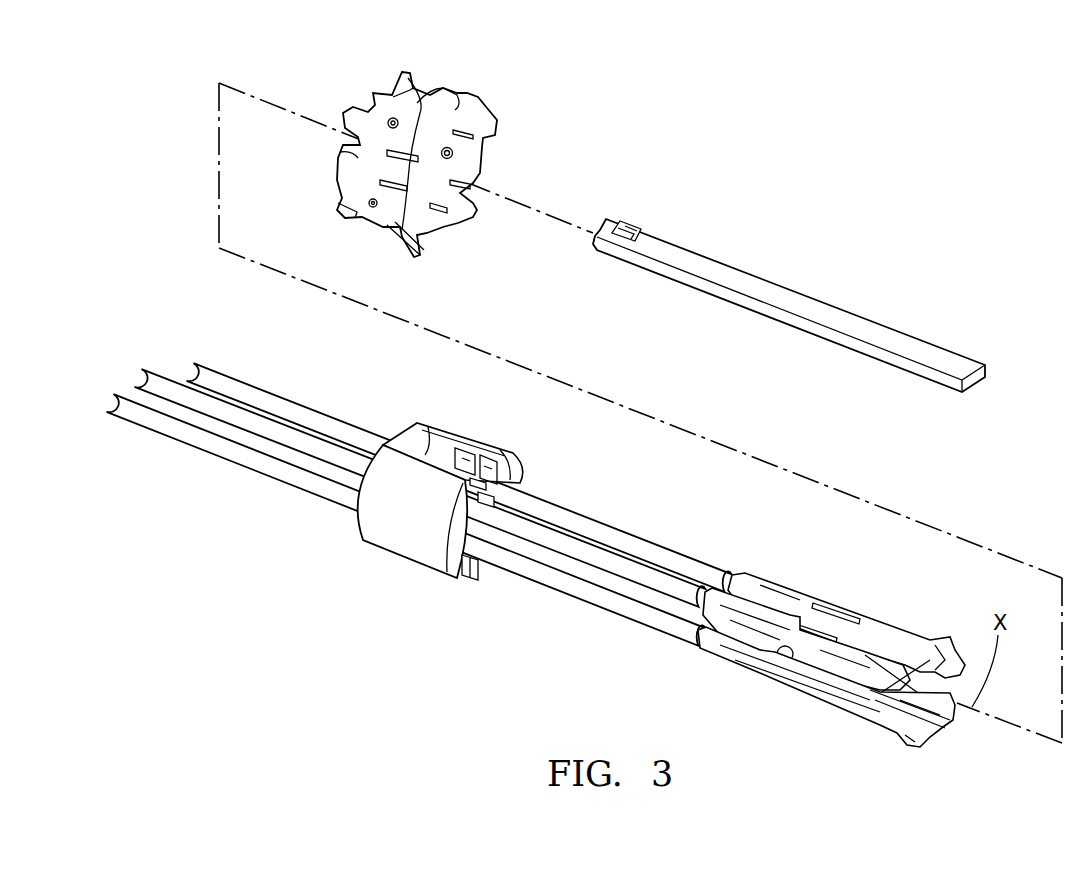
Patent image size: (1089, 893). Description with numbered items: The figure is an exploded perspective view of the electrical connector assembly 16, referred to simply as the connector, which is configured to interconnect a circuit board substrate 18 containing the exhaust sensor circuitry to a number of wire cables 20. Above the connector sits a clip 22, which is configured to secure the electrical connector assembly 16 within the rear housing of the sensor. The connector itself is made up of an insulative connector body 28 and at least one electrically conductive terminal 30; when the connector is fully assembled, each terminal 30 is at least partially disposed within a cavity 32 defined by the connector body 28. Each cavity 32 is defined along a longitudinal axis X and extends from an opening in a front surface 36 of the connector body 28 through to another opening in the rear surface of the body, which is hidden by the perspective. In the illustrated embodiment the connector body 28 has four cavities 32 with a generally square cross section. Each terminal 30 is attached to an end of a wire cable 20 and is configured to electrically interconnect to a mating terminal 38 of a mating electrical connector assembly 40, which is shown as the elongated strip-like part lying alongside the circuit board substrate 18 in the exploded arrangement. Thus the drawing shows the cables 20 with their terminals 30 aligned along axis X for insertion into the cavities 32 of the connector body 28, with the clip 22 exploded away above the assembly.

The electrical connector assembly 16 is at (657, 120).
The circuit board substrate 18 is at (827, 312).
The wire cables 20 is at (592, 615).
The clip 22 is at (422, 92).
The connector body 28 is at (385, 538).
The terminal 30 is at (762, 695).
The cavity 32 is at (500, 478).
The front surface 36 is at (463, 448).
The mating terminal 38 is at (638, 234).
The mating electrical connector assembly 40 is at (723, 242).